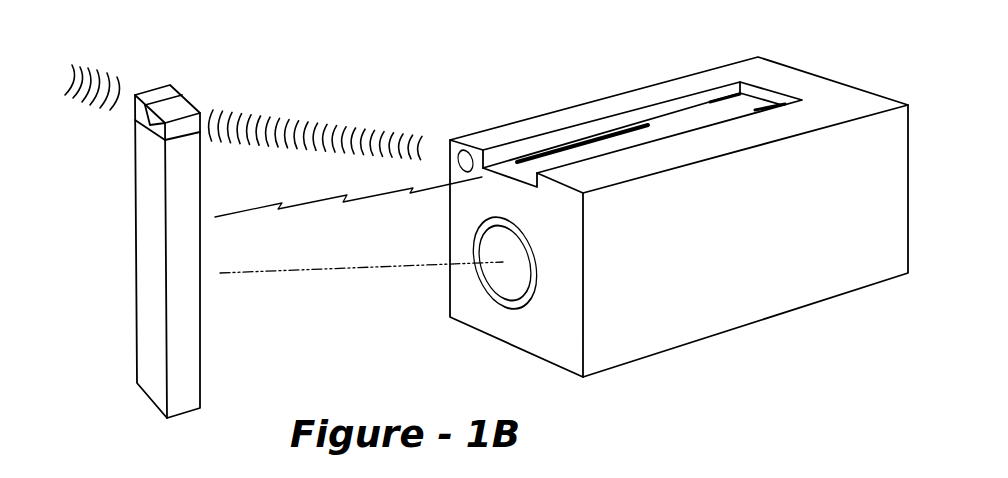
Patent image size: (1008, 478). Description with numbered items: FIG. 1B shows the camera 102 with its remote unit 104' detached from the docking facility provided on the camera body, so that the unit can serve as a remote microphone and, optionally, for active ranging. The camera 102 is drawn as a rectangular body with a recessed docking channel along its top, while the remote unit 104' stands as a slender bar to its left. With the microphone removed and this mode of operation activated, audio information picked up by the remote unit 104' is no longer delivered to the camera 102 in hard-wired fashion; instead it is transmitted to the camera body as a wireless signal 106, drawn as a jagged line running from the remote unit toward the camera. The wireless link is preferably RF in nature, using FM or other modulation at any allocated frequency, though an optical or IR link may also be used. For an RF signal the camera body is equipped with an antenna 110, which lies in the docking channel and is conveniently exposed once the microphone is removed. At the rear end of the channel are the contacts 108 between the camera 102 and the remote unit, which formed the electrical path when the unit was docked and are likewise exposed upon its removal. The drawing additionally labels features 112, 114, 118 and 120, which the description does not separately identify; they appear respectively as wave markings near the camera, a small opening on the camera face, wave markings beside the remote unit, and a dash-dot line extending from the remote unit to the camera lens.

The camera 102 is at (792, 288).
The remote unit 104' is at (112, 251).
The wireless signal 106 is at (388, 197).
The contacts 108 is at (768, 112).
The antenna 110 is at (608, 127).
The returning signal waves 112 is at (373, 132).
The aperture 114 is at (463, 150).
The emitted waves from marker 118 is at (100, 77).
The optical axis 120 is at (367, 267).